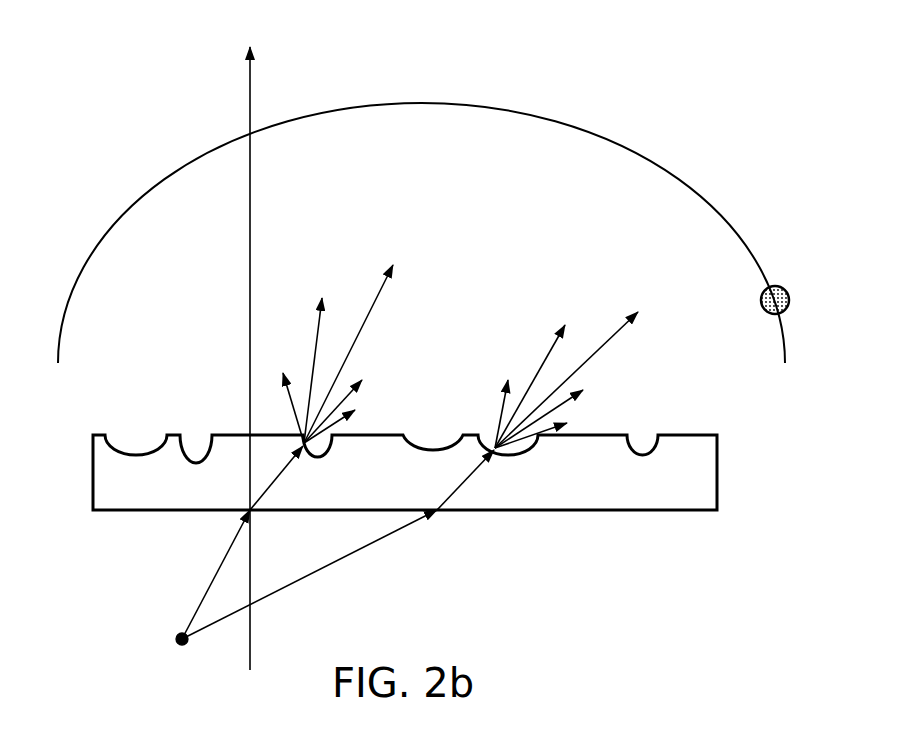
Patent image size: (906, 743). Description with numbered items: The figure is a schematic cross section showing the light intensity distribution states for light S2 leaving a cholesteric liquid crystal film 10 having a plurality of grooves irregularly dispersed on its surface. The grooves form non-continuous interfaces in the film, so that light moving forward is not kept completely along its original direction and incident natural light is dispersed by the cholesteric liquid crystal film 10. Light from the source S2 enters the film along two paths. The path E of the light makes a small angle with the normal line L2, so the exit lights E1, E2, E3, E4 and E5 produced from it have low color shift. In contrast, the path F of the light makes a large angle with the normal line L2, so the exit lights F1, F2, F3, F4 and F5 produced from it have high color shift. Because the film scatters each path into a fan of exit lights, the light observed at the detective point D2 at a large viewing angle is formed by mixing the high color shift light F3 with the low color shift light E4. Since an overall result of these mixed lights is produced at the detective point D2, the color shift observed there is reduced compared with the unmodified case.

The cholesteric liquid crystal film 10 is at (110, 473).
The normal line L2 is at (247, 345).
The detective point D2 is at (791, 292).
The light S2 is at (178, 636).
The path of the light E is at (215, 575).
The path of the light F is at (323, 570).
The exit light E1 is at (287, 393).
The exit light E2 is at (320, 356).
The exit light E3 is at (357, 337).
The exit light E4 is at (344, 394).
The exit light E5 is at (343, 419).
The exit light F1 is at (510, 399).
The exit light F2 is at (539, 371).
The exit light F3 is at (575, 365).
The exit light F4 is at (554, 409).
The exit light F5 is at (549, 427).